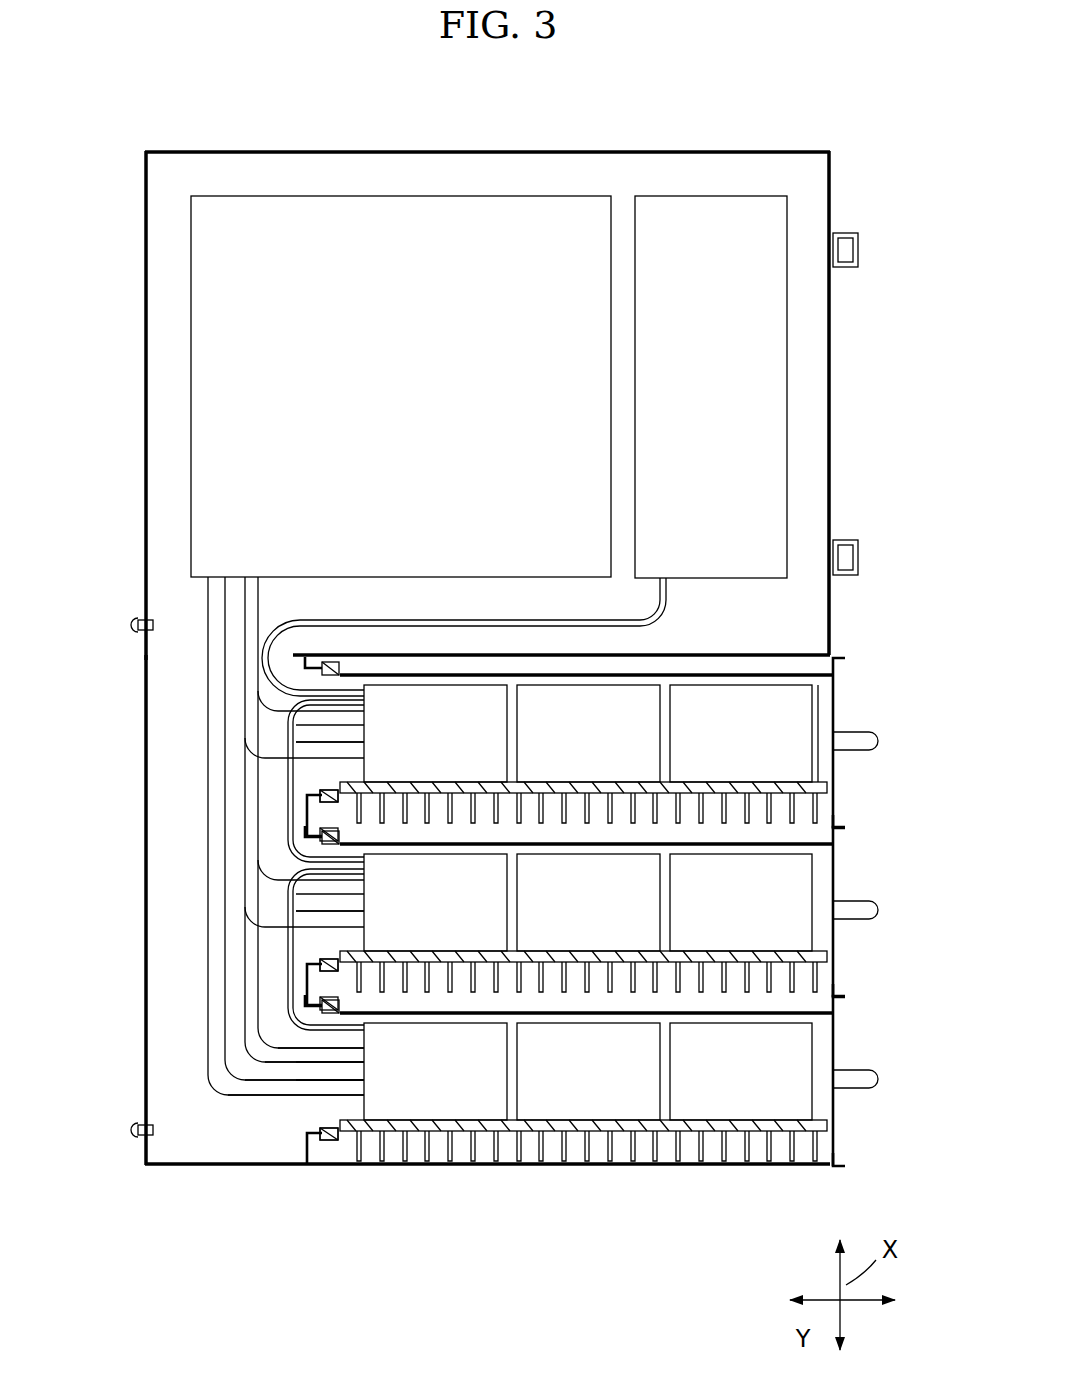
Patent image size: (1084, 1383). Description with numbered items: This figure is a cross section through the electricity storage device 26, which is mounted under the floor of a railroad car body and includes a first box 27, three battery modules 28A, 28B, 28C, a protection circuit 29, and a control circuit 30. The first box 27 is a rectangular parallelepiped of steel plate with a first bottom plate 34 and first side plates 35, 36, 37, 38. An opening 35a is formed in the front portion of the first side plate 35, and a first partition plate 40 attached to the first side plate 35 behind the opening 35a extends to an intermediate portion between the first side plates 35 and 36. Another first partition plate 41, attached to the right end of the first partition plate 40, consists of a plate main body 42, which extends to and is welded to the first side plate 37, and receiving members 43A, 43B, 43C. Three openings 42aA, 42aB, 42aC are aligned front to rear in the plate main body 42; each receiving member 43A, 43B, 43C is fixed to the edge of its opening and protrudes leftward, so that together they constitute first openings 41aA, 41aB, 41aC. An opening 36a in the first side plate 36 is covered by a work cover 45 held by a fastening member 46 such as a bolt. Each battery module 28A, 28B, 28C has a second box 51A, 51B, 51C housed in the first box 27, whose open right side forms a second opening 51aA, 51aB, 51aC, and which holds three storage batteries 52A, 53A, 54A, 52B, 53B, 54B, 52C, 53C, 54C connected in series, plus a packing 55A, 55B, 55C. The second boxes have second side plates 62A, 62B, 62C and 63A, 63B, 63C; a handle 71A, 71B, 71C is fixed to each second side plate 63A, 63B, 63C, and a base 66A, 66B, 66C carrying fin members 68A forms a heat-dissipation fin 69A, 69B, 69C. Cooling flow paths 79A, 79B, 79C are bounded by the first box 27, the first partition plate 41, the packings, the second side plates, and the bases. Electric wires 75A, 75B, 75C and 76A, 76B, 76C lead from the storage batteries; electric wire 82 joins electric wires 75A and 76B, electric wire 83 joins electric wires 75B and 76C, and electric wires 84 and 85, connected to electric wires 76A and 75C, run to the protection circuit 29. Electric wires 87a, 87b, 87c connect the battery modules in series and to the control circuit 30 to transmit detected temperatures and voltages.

The electricity storage device 26 is at (496, 645).
The first box 27 is at (496, 645).
The battery module 28A is at (659, 1071).
The battery module 28B is at (659, 902).
The battery module 28C is at (659, 733).
The protection circuit 29 is at (541, 205).
The control circuit 30 is at (717, 205).
The first bottom plate 34 is at (822, 340).
The first side plate 35 is at (835, 427).
The opening 35a is at (823, 690).
The first side plate 36 is at (145, 400).
The opening 36a is at (142, 680).
The first side plate 37 is at (332, 1167).
The first side plate 38 is at (340, 150).
The first partition plate 40 is at (740, 654).
The first partition plate 41 is at (203, 906).
The first opening 41aA is at (305, 1082).
The first opening 41aB is at (314, 920).
The first opening 41aC is at (308, 745).
The plate main body 42 is at (248, 796).
The opening 42aA is at (203, 1096).
The opening 42aB is at (203, 924).
The opening 42aC is at (203, 728).
The receiving member 43A is at (302, 1136).
The receiving member 43B is at (305, 960).
The receiving member 43C is at (305, 790).
The work cover 45 is at (142, 640).
The fastening member 46 is at (137, 626).
The second box 51A is at (508, 1078).
The second box 51B is at (508, 881).
The second box 51C is at (509, 714).
The second opening 51aA is at (328, 1078).
The second opening 51aB is at (328, 910).
The second opening 51aC is at (330, 740).
The storage battery 52A is at (721, 1086).
The storage battery 52B is at (721, 917).
The storage battery 52C is at (721, 748).
The storage battery 53A is at (586, 1086).
The storage battery 53B is at (586, 917).
The storage battery 53C is at (586, 748).
The storage battery 54A is at (450, 1086).
The storage battery 54B is at (450, 917).
The storage battery 54C is at (450, 748).
The packing 55A is at (332, 1128).
The packing 55B is at (332, 959).
The packing 55C is at (332, 790).
The second side plate 62A is at (560, 1011).
The second side plate 62B is at (560, 842).
The second side plate 62C is at (473, 673).
The second side plate 63A is at (838, 1158).
The second side plate 63B is at (838, 989).
The second side plate 63C is at (838, 820).
The base 66A is at (587, 1183).
The base 66B is at (610, 1005).
The base 66C is at (610, 836).
The fin member 68A is at (702, 1162).
The heat-dissipation fin 69A is at (836, 1131).
The heat-dissipation fin 69B is at (836, 962).
The heat-dissipation fin 69C is at (836, 793).
The handle 71A is at (878, 1080).
The handle 71B is at (878, 911).
The handle 71C is at (878, 742).
The electric wire 75A is at (364, 1056).
The electric wire 75B is at (364, 887).
The electric wire 75C is at (364, 718).
The electric wire 76A is at (364, 1088).
The electric wire 76B is at (364, 919).
The electric wire 76C is at (364, 750).
The flow path 79A is at (657, 1178).
The flow path 79B is at (657, 978).
The flow path 79C is at (657, 809).
The electric wire 82 is at (232, 1027).
The electric wire 83 is at (244, 862).
The electric wire 84 is at (232, 1100).
The electric wire 85 is at (257, 599).
The electric wire 87a is at (286, 992).
The electric wire 87b is at (286, 832).
The electric wire 87c is at (278, 656).